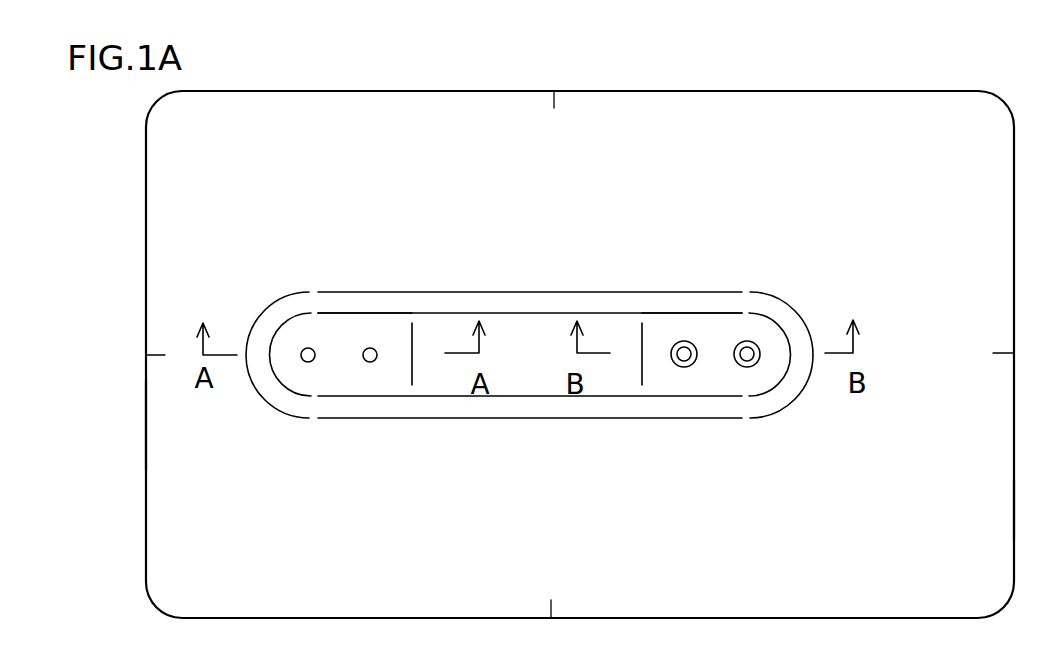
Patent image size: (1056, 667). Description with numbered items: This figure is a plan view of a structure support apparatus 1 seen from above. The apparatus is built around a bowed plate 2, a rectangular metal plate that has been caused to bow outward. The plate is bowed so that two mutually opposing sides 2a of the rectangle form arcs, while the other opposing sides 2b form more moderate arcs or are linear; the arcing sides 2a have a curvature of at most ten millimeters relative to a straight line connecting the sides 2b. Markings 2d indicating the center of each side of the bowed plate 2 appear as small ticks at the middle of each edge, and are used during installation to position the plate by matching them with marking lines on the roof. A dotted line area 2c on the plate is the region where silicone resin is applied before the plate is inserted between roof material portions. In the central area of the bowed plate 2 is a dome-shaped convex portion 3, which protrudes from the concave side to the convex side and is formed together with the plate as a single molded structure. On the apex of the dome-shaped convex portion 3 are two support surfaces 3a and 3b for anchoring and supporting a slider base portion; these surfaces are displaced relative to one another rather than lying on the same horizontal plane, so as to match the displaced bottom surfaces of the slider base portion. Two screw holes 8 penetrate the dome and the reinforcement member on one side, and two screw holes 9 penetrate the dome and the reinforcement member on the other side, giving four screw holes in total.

The structure support apparatus 1 is at (777, 90).
The bowed plate 2 is at (432, 108).
The sides forming arcs 2a is at (146, 413).
The other opposing sides 2b is at (632, 90).
The dotted line area 2c is at (1014, 510).
The markings 2d is at (548, 100).
The dome-shaped convex portion 3 is at (507, 302).
The support surface 3a is at (344, 332).
The support surface 3b is at (700, 327).
The screw holes 8 is at (308, 362).
The screw holes 9 is at (747, 367).